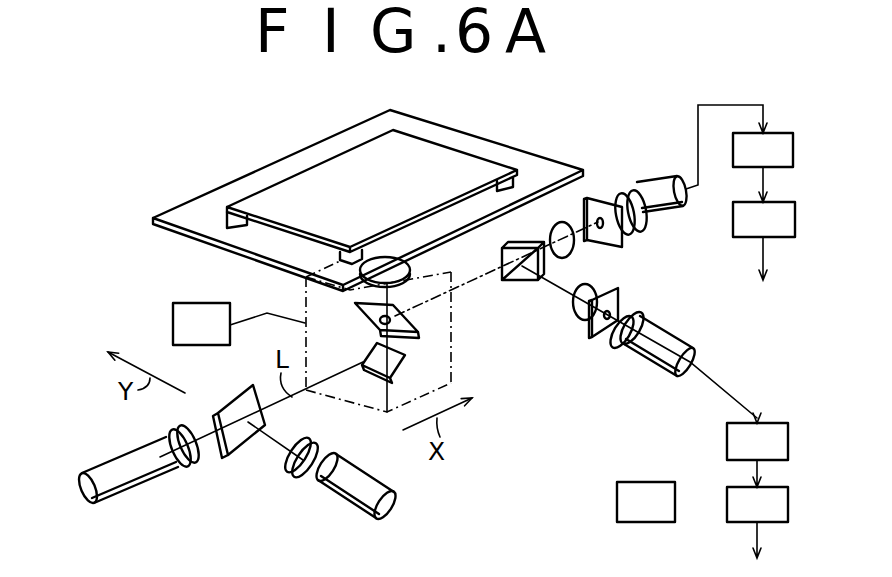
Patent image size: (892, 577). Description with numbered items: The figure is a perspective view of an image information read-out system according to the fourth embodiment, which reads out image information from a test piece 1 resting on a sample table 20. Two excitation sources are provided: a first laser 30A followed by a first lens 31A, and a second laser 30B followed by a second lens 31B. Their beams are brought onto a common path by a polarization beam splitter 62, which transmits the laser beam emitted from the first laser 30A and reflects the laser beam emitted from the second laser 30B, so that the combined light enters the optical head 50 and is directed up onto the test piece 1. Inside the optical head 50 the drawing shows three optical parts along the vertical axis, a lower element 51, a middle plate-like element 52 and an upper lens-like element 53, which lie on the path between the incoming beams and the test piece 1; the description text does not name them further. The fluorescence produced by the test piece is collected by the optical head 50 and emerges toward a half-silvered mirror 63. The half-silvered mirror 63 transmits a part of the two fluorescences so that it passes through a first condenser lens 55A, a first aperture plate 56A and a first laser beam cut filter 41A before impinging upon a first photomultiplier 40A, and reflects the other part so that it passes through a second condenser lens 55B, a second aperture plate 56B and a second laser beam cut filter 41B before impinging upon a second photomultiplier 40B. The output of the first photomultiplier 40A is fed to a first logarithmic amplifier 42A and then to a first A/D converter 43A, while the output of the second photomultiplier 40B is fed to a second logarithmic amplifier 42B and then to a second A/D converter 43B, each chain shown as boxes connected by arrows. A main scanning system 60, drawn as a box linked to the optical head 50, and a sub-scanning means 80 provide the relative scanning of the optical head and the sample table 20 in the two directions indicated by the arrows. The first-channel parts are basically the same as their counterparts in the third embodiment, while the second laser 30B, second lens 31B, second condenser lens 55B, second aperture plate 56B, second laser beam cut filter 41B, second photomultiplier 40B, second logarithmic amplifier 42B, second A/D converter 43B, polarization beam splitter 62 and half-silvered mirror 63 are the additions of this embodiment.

The test piece 1 is at (430, 147).
The sample table 20 is at (485, 148).
The first laser 30A is at (150, 480).
The second laser 30B is at (343, 497).
The first lens 31A is at (188, 462).
The second lens 31B is at (297, 473).
The first photomultiplier 40A is at (653, 183).
The second photomultiplier 40B is at (653, 366).
The first laser beam cut filter 41A is at (630, 230).
The second laser beam cut filter 41B is at (636, 316).
The first logarithmic amplifier 42A is at (763, 167).
The second logarithmic amplifier 42B is at (757, 455).
The first A/D converter 43A is at (764, 241).
The second A/D converter 43B is at (757, 522).
The optical head 50 is at (453, 362).
The mirror 51 is at (370, 380).
The beam splitter 52 is at (420, 323).
The objective lens 53 is at (410, 270).
The first condenser lens 55A is at (561, 222).
The second condenser lens 55B is at (578, 310).
The first aperture plate 56A is at (593, 195).
The second aperture plate 56B is at (600, 338).
The main scanning system 60 is at (239, 324).
The polarization beam splitter 62 is at (228, 400).
The half-silvered mirror 63 is at (518, 282).
The sub-scanning means 80 is at (646, 502).